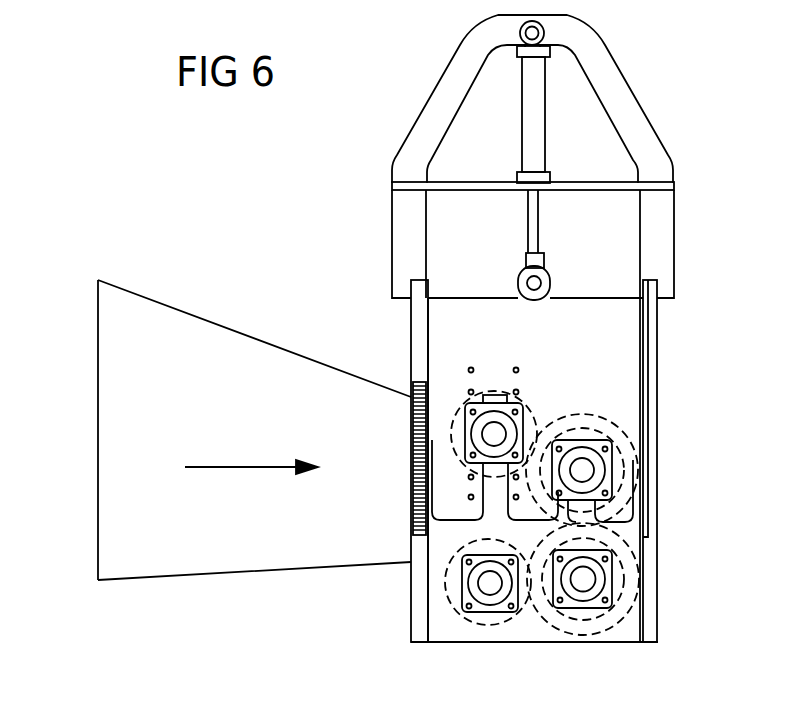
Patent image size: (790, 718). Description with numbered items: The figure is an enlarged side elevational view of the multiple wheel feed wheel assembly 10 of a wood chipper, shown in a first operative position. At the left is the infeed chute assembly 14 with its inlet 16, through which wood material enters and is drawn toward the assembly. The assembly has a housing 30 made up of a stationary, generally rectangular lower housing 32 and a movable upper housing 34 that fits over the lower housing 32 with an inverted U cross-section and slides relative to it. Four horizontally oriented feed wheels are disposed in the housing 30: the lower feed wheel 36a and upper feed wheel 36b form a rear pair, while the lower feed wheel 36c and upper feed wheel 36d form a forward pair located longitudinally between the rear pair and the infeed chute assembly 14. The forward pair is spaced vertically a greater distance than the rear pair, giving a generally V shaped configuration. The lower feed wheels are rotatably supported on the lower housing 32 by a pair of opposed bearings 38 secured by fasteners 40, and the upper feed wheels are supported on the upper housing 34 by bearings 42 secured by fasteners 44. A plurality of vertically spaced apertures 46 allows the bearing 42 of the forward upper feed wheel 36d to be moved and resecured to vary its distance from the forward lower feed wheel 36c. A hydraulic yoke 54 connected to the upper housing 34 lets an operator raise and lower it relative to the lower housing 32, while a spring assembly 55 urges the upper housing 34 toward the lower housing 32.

The multiple wheel feed wheel assembly 10 is at (275, 203).
The infeed chute assembly 14 is at (150, 300).
The inlet 16 is at (98, 375).
The housing 30 is at (457, 298).
The lower housing 32 is at (618, 635).
The upper housing 34 is at (625, 352).
The lower feed wheel 36a is at (618, 620).
The upper feed wheel 36b is at (627, 462).
The lower feed wheel 36c is at (445, 577).
The upper feed wheel 36d is at (428, 425).
The bearings 38 is at (465, 581).
The fasteners 40 is at (512, 609).
The bearings 42 is at (475, 422).
The fasteners 44 is at (608, 442).
The apertures 46 is at (517, 349).
The hydraulic yoke 54 is at (538, 250).
The spring assembly 55 is at (411, 490).